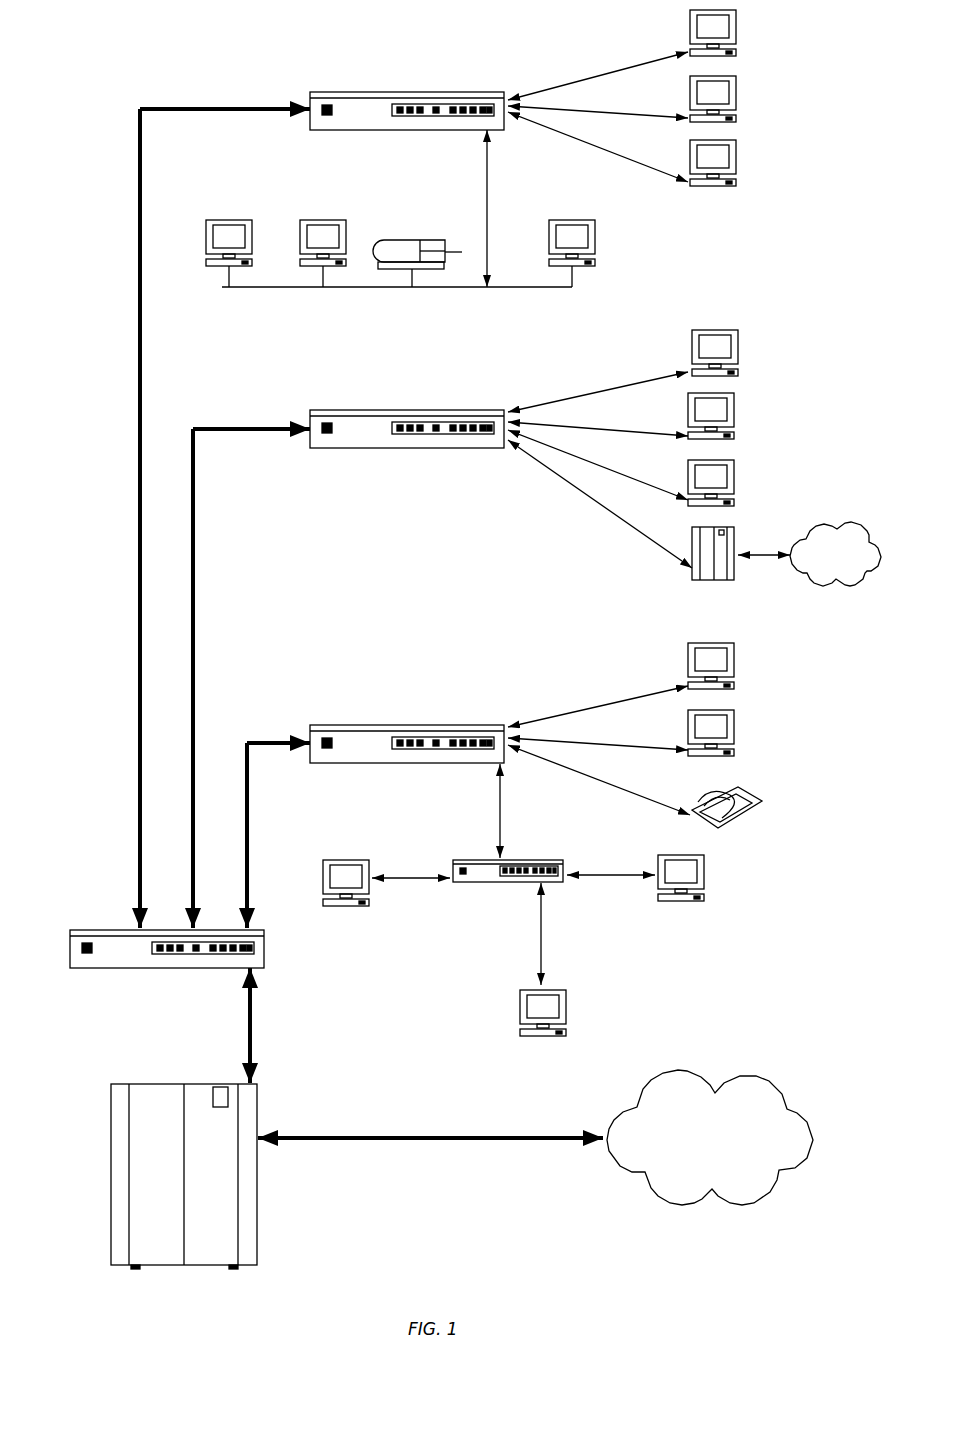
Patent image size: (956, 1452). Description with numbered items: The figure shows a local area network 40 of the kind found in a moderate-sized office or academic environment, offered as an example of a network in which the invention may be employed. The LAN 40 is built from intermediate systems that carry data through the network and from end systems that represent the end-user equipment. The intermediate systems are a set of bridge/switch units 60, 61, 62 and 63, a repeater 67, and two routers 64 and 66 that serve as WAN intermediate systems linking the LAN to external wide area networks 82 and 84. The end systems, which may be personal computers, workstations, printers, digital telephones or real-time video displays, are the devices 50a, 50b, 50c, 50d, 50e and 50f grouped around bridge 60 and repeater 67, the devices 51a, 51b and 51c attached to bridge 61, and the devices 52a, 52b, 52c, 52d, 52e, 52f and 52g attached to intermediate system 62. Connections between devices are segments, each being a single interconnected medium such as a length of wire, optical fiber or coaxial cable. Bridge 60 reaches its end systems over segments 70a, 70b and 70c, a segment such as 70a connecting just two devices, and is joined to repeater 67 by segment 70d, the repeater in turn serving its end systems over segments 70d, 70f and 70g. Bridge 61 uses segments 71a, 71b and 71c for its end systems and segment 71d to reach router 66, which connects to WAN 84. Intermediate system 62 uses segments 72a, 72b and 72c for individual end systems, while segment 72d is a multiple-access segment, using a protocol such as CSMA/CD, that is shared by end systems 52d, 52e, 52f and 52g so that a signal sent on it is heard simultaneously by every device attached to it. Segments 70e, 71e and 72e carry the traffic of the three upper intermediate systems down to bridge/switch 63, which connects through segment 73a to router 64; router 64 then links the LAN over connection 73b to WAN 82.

The local area network 40 is at (84, 494).
The end system 50a is at (328, 861).
The end system 50b is at (571, 1014).
The end system 50c is at (709, 874).
The end system 50d is at (739, 800).
The end system 50e is at (739, 732).
The end system 50f is at (742, 653).
The end system 51a is at (742, 341).
The end system 51b is at (739, 410).
The end system 51c is at (738, 474).
The end system 52a is at (740, 33).
The end system 52b is at (740, 96).
The end system 52c is at (740, 160).
The end system 52d is at (597, 240).
The end system 52e is at (412, 243).
The end system 52f is at (320, 222).
The end system 52g is at (216, 222).
The LAN intermediate system 60 is at (406, 726).
The LAN intermediate system 61 is at (406, 411).
The LAN intermediate system 62 is at (406, 93).
The LAN intermediate system 63 is at (112, 930).
The WAN intermediate system 64 is at (111, 1141).
The WAN intermediate system 66 is at (737, 547).
The intermediate system 67 is at (535, 861).
The segment 70a is at (612, 697).
The segment 70b is at (607, 745).
The segment 70c is at (609, 787).
The segment 70d is at (508, 798).
The segment 70e is at (252, 745).
The segment 70f is at (549, 954).
The segment 70g is at (397, 880).
The segment 71a is at (597, 389).
The segment 71b is at (593, 429).
The segment 71c is at (599, 467).
The segment 71d is at (594, 504).
The segment 71e is at (220, 431).
The segment 72a is at (590, 69).
The segment 72b is at (585, 113).
The segment 72c is at (602, 150).
The segment 72d is at (493, 186).
The segment 72e is at (223, 111).
The segment 73a is at (255, 1043).
The segment 73b is at (440, 1138).
The wide area network 82 is at (750, 1077).
The wide area network 84 is at (826, 536).